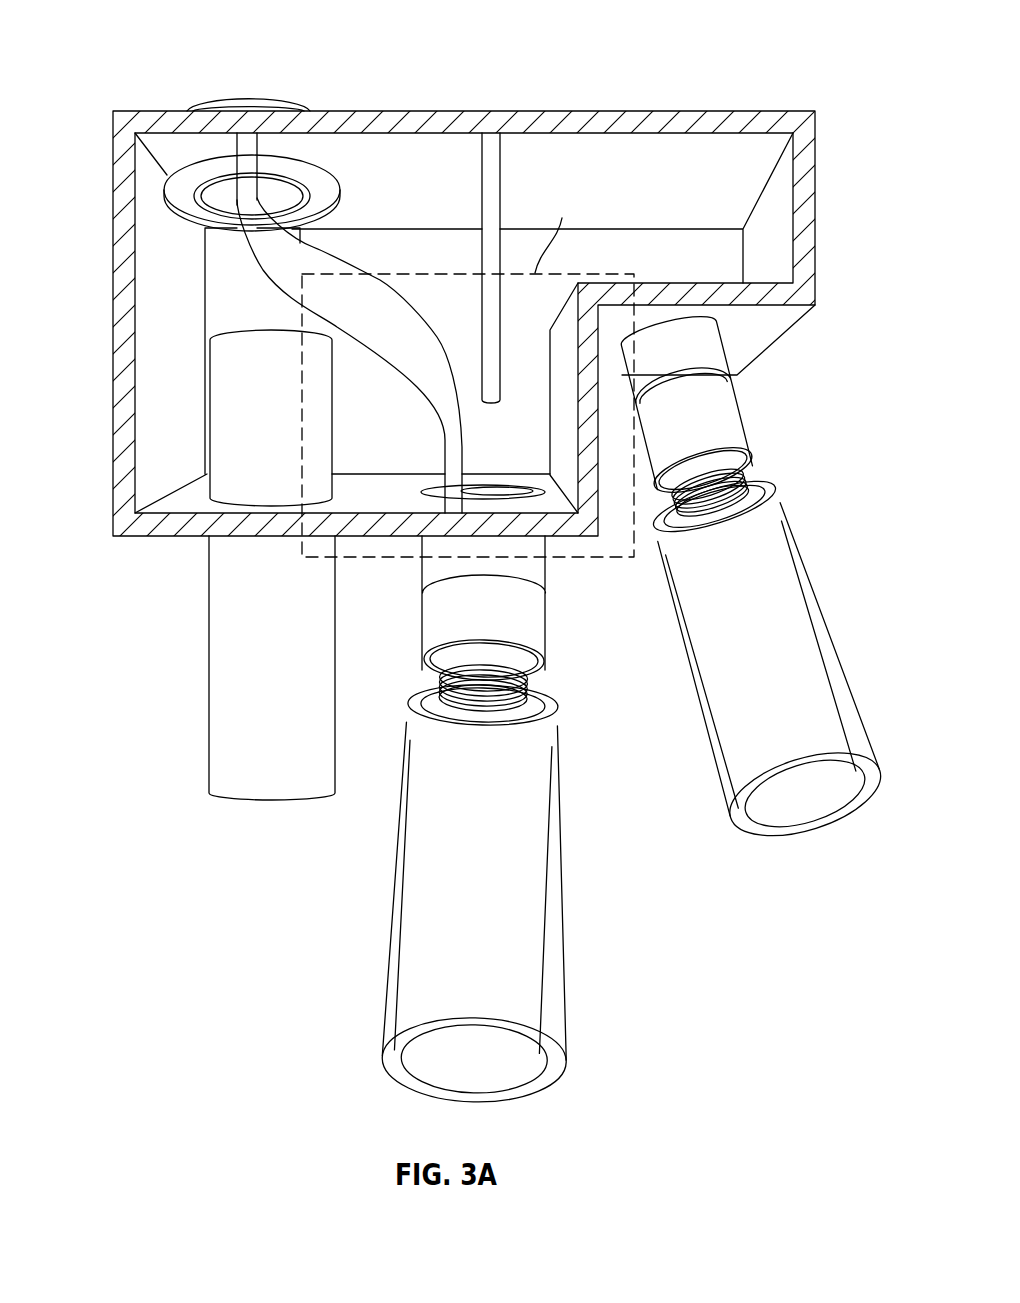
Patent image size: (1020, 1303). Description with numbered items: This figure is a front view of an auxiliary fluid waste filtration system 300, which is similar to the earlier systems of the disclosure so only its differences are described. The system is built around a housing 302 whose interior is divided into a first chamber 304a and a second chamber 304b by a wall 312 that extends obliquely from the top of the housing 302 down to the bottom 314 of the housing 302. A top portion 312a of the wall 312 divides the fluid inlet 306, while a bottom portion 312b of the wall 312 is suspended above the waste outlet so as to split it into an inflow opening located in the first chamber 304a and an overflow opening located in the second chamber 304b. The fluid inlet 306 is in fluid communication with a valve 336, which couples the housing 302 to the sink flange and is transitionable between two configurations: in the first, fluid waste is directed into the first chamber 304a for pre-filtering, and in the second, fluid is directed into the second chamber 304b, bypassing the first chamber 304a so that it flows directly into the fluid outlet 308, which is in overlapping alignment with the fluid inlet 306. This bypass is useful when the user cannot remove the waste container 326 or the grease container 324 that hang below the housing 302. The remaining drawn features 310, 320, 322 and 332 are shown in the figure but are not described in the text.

The auxiliary fluid waste filtration system 300 is at (842, 76).
The housing 302 is at (745, 110).
The first chamber 304a is at (617, 183).
The second chamber 304b is at (217, 270).
The fluid inlet 306 is at (215, 202).
The fluid outlet 308 is at (240, 333).
The side cavity 310 is at (687, 282).
The wall 312 is at (340, 263).
The top portion of the wall 312a is at (258, 196).
The bottom portion of the wall 312b is at (453, 481).
The bottom of the housing 314 is at (347, 525).
The drain pipe 320 is at (209, 660).
The side outlet pipe 322 is at (777, 295).
The grease container 324 is at (778, 573).
The waste container 326 is at (526, 820).
The vent tube 332 is at (485, 188).
The valve 336 is at (230, 97).